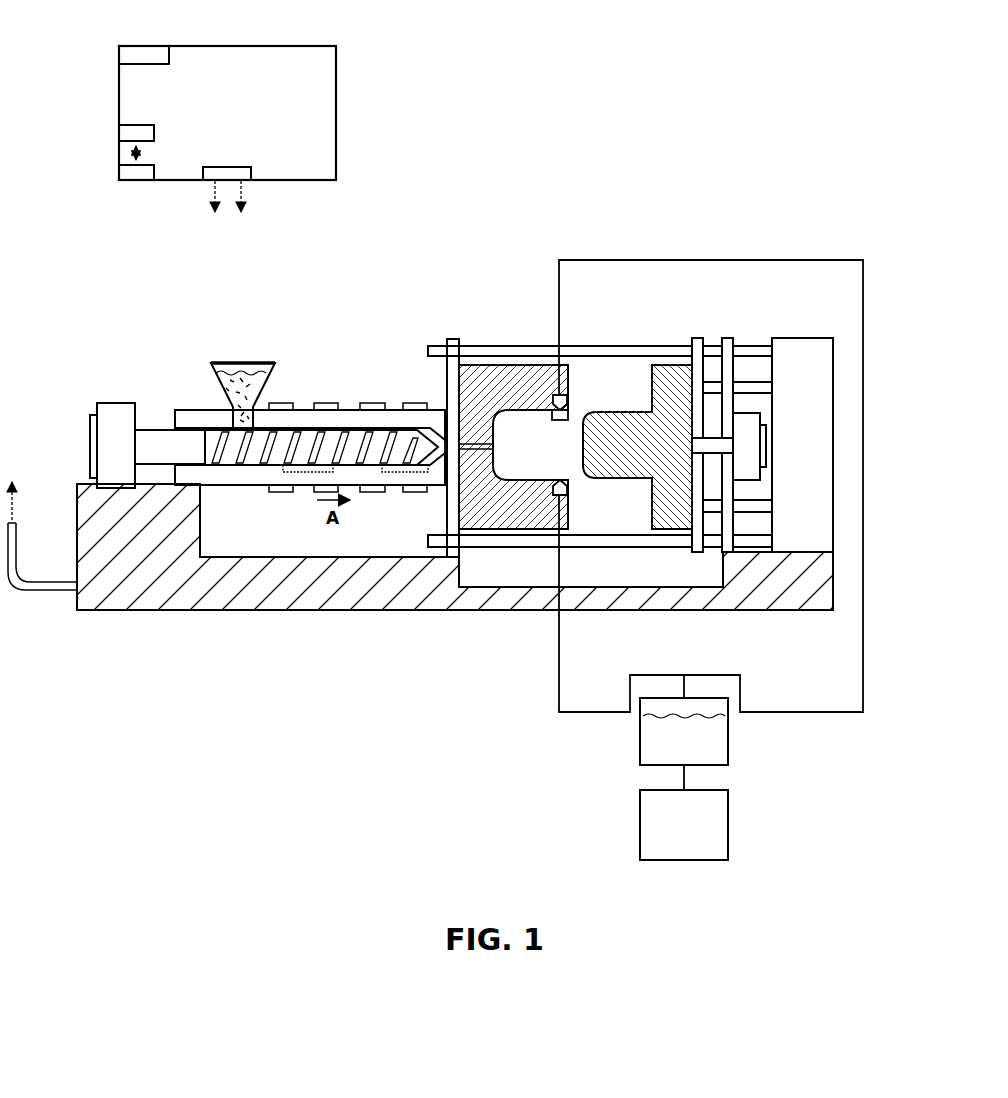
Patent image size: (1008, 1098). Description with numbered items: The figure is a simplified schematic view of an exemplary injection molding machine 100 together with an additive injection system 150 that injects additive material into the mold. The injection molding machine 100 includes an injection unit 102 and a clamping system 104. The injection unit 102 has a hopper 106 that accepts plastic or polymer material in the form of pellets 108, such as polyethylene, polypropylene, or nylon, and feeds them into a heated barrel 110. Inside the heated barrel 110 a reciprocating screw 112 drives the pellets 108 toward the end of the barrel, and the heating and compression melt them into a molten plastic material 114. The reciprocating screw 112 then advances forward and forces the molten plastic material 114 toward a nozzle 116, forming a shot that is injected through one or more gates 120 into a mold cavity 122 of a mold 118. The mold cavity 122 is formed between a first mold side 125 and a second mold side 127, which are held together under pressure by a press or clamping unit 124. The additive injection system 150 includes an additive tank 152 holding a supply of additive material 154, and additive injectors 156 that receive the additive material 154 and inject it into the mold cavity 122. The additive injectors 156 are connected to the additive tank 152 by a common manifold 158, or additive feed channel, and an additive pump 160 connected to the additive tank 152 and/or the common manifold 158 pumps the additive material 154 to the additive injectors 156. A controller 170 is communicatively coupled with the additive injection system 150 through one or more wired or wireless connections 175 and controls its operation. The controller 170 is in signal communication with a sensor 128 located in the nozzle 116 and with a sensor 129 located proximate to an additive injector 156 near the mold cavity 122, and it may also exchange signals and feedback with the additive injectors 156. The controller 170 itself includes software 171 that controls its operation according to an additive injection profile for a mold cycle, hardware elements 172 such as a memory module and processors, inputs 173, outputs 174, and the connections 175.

The injection molding machine 100 is at (497, 128).
The injection unit 102 is at (289, 518).
The clamping system 104 is at (597, 615).
The hopper 106 is at (255, 361).
The pellets 108 is at (236, 386).
The heated barrel 110 is at (306, 401).
The reciprocating screw 112 is at (251, 463).
The molten plastic material 114 is at (357, 430).
The nozzle 116 is at (461, 410).
The mold 118 is at (575, 423).
The gates 120 is at (483, 443).
The mold cavity 122 is at (533, 420).
The clamping unit 124 is at (777, 332).
The first mold side 125 is at (491, 516).
The second mold side 127 is at (637, 466).
The sensor 128 is at (450, 440).
The sensor 129 is at (570, 409).
The additive injection system 150 is at (514, 758).
The additive tank 152 is at (729, 746).
The additive material 154 is at (684, 732).
The additive injectors 156 is at (556, 393).
The common manifold 158 is at (864, 547).
The additive pump 160 is at (684, 825).
The controller 170 is at (290, 46).
The software 171 is at (124, 133).
The hardware elements 172 is at (124, 172).
The inputs 173 is at (124, 53).
The outputs 174 is at (251, 181).
The connections 175 is at (210, 199).